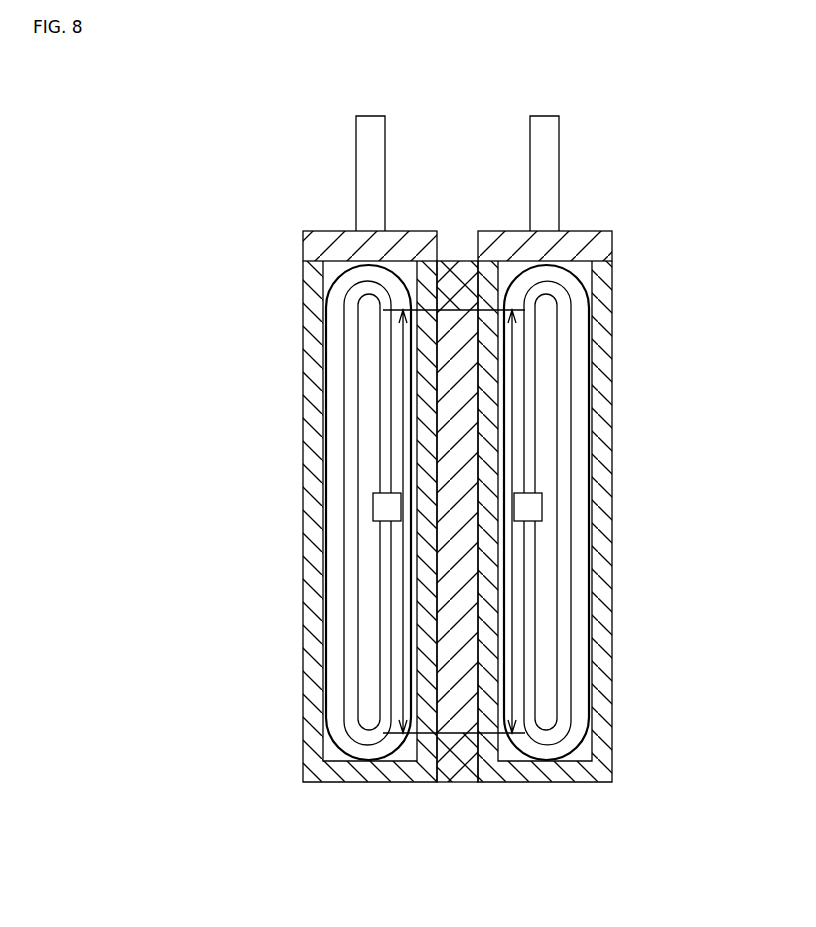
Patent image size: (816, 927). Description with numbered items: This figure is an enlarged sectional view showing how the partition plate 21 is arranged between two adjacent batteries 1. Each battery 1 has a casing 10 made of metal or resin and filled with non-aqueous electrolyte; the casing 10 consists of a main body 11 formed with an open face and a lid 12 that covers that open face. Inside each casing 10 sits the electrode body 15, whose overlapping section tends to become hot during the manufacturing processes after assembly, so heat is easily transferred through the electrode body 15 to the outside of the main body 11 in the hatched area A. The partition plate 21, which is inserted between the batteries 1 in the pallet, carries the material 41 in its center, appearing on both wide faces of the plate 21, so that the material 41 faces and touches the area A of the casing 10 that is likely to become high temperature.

The battery 1 is at (458, 447).
The casing 10 is at (205, 240).
The main body 11 is at (310, 290).
The lid 12 is at (303, 247).
The electrode body 15 is at (328, 405).
The partition plate 21 is at (445, 270).
The material 41 is at (447, 323).